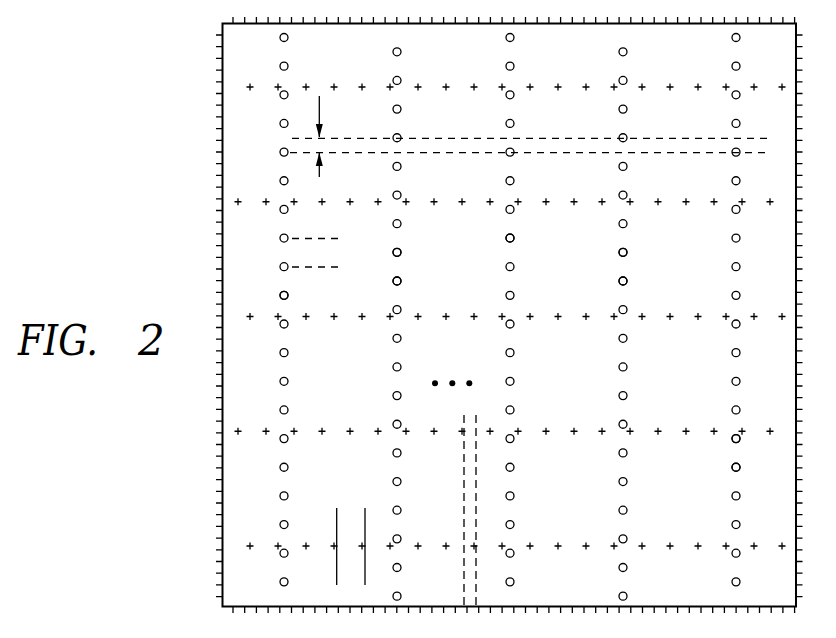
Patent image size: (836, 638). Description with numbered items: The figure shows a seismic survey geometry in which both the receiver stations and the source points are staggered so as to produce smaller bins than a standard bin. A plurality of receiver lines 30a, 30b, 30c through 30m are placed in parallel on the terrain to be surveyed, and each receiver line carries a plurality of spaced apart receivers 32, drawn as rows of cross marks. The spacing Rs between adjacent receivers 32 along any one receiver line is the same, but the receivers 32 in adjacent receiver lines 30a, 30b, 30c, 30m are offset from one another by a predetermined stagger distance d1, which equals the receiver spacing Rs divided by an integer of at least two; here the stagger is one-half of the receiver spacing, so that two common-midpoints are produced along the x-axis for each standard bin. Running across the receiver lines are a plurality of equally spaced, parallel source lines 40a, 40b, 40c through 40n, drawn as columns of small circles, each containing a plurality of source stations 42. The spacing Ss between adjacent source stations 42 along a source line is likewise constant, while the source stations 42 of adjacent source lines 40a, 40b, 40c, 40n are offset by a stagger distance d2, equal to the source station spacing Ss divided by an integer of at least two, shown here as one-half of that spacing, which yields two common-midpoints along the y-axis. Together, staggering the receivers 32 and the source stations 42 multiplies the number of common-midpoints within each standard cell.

The receiver line 30a is at (548, 543).
The receiver line 30b is at (557, 436).
The receiver line 30c is at (543, 315).
The receiver line 30m is at (513, 98).
The receiver 32 is at (689, 432).
The source line 40a is at (735, 366).
The source line 40b is at (628, 383).
The source line 40c is at (516, 376).
The source line 40n is at (291, 400).
The source station 42 is at (762, 486).
The receiver stagger distance d1 is at (463, 472).
The source station stagger distance d2 is at (345, 143).
The source station spacing Ss is at (318, 250).
The receiver spacing Rs is at (350, 572).